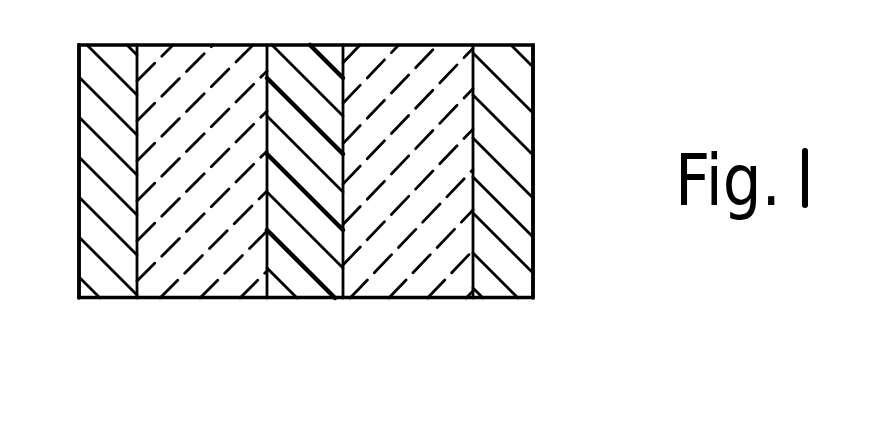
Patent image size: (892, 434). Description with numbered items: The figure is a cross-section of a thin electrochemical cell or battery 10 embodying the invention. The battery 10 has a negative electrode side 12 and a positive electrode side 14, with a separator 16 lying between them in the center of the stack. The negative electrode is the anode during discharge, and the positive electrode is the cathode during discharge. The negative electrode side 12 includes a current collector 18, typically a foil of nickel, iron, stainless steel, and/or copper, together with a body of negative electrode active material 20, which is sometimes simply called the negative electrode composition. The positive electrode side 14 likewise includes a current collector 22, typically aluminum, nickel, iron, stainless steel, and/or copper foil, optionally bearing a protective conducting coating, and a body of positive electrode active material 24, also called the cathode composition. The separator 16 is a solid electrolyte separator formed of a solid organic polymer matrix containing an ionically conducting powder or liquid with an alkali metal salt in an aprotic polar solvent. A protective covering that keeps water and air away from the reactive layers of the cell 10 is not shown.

The electrochemical cell or battery 10 is at (310, 326).
The negative electrode side 12 is at (64, 167).
The positive electrode side 14 is at (550, 167).
The separator 16 is at (312, 46).
The current collector 18 is at (119, 285).
The negative electrode active material 20 is at (222, 285).
The current collector 22 is at (503, 287).
The positive electrode active material 24 is at (372, 287).